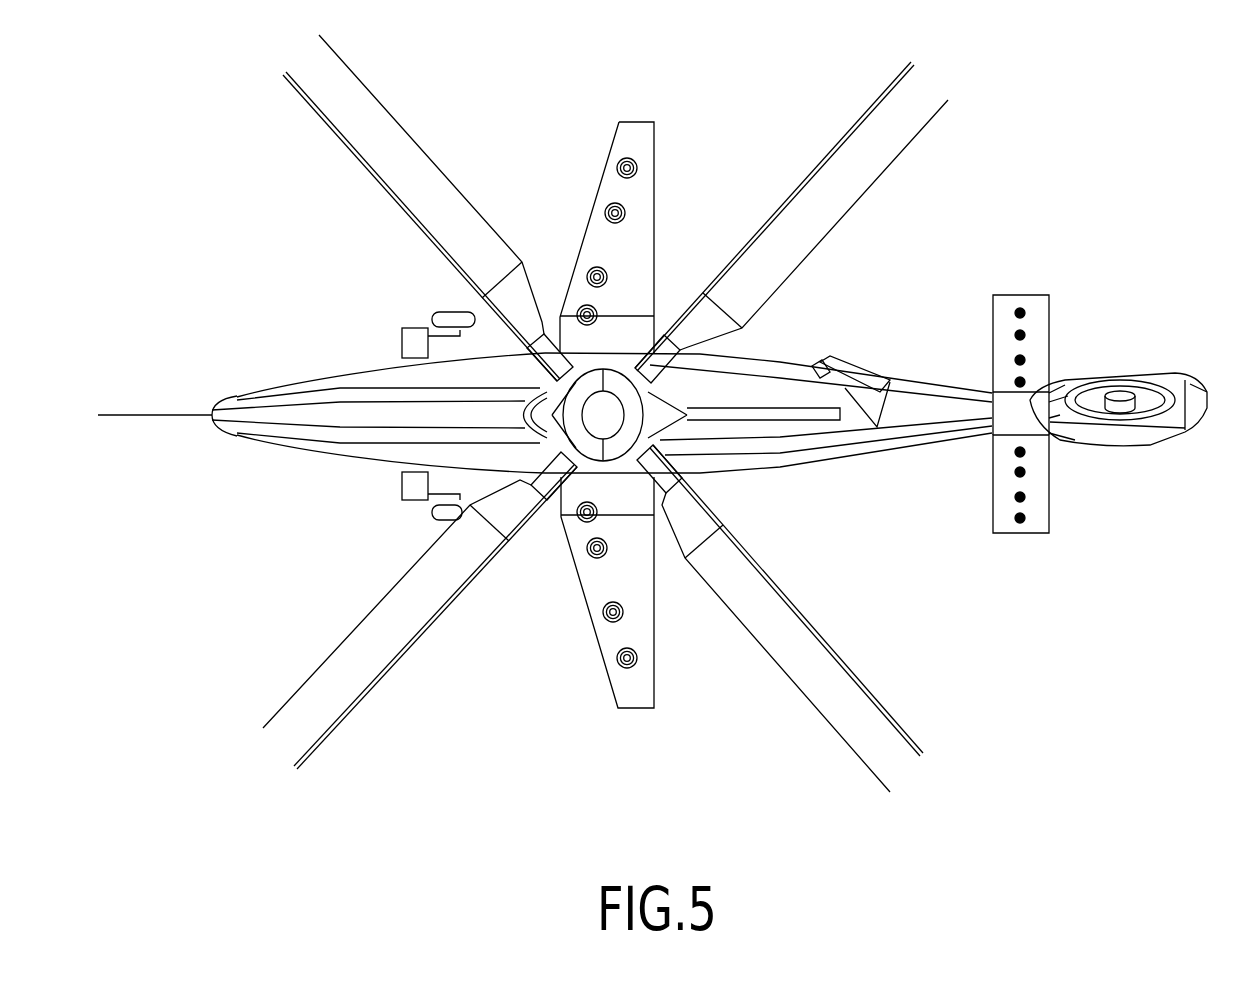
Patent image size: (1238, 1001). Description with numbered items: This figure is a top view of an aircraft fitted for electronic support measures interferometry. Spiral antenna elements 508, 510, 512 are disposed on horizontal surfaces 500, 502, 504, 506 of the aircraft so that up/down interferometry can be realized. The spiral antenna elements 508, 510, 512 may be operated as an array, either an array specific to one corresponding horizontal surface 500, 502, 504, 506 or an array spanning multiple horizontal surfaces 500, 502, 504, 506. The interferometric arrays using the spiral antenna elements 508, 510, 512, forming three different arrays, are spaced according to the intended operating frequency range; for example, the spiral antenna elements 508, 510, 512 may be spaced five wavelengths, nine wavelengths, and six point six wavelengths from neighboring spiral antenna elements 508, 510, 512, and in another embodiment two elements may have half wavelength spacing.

The horizontal surface 500 is at (643, 252).
The horizontal surface 502 is at (643, 570).
The horizontal surface 504 is at (1042, 347).
The horizontal surface 506 is at (1042, 488).
The spiral antenna element 508 is at (623, 160).
The spiral antenna element 510 is at (620, 666).
The spiral antenna element 512 is at (1017, 317).